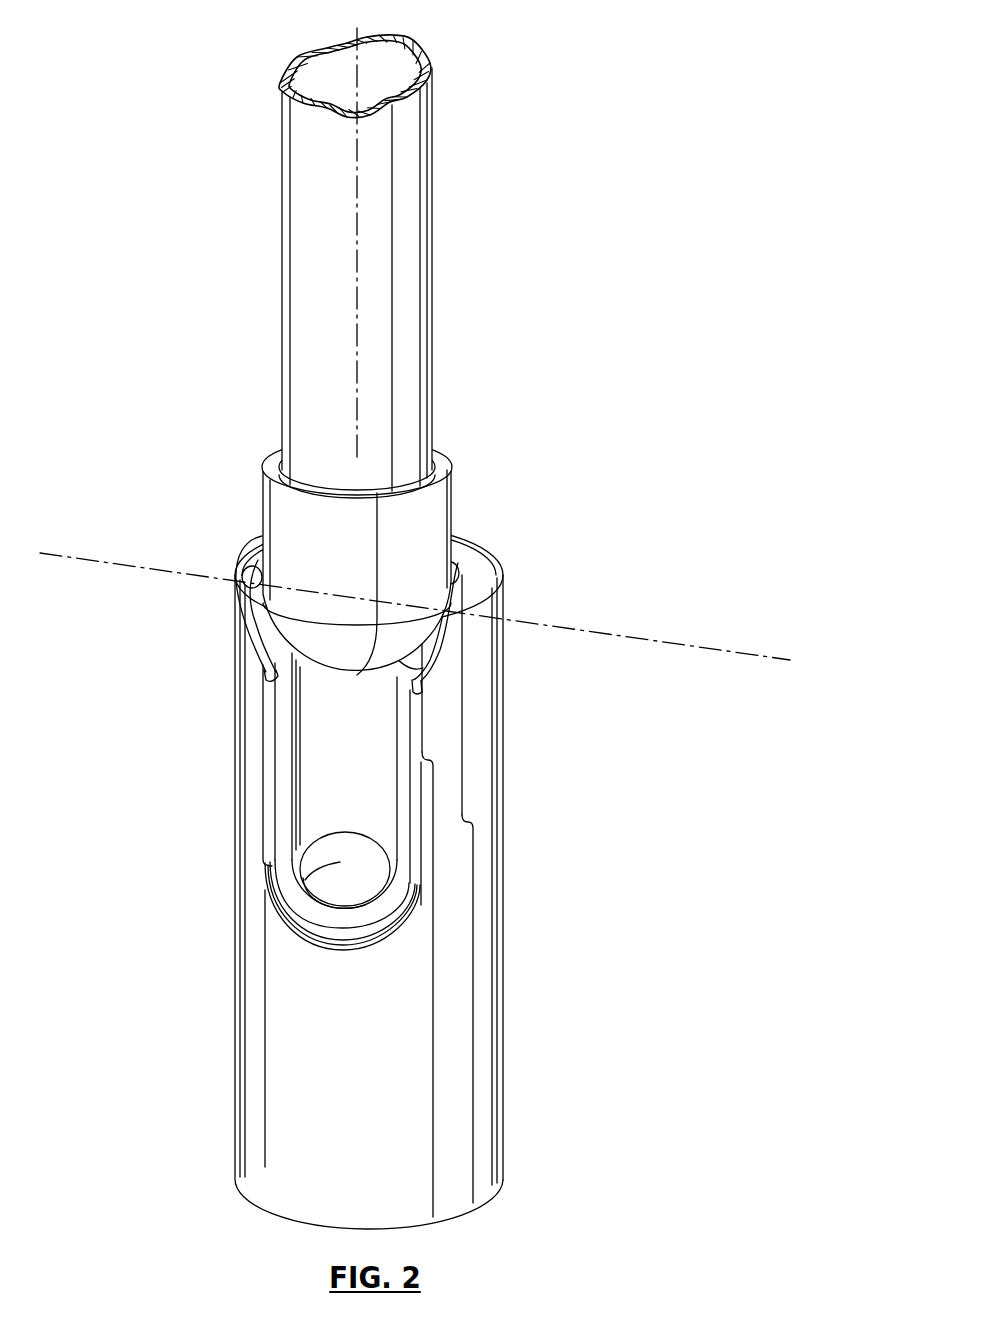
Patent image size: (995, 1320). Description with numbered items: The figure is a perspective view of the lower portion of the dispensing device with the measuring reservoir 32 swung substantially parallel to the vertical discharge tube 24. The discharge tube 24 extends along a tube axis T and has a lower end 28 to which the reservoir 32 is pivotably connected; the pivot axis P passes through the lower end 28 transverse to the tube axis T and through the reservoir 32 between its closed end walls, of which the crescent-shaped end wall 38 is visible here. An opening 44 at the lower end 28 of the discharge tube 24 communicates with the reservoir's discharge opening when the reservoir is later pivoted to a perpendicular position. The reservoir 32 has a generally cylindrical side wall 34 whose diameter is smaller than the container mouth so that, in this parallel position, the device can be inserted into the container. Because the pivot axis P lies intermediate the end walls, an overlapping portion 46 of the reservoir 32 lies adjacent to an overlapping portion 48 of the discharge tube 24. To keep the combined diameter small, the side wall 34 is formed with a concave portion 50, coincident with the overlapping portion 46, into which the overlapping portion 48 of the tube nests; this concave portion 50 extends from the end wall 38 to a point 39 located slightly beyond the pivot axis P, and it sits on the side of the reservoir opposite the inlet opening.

The discharge tube 24 is at (433, 237).
The tube axis T is at (357, 281).
The end wall 38 is at (462, 548).
The pivot axis P is at (662, 643).
The measuring reservoir 32 is at (601, 908).
The side wall 34 is at (460, 1093).
The lower end 28 is at (296, 786).
The point 39 is at (337, 950).
The opening 44 is at (340, 861).
The overlapping portion of the discharge tube 48 is at (429, 758).
The overlapping portion of the reservoir 46 is at (463, 817).
The concave portion 50 is at (286, 706).